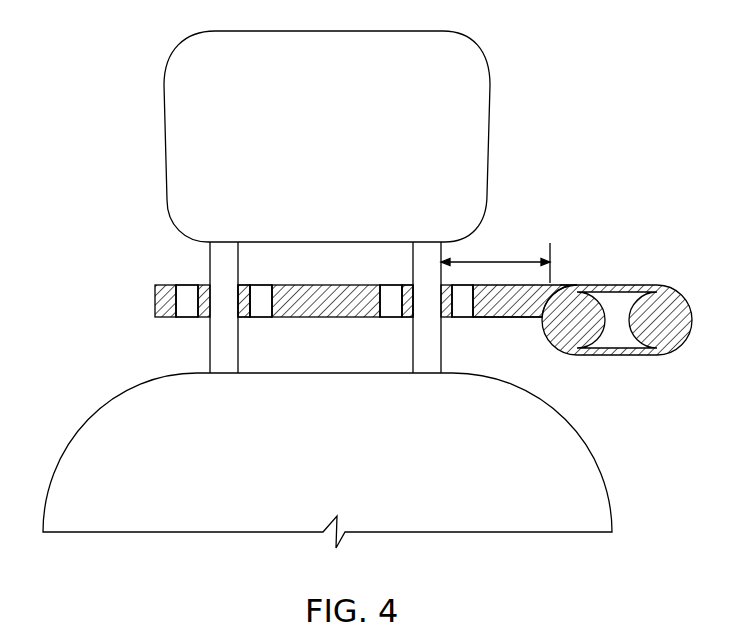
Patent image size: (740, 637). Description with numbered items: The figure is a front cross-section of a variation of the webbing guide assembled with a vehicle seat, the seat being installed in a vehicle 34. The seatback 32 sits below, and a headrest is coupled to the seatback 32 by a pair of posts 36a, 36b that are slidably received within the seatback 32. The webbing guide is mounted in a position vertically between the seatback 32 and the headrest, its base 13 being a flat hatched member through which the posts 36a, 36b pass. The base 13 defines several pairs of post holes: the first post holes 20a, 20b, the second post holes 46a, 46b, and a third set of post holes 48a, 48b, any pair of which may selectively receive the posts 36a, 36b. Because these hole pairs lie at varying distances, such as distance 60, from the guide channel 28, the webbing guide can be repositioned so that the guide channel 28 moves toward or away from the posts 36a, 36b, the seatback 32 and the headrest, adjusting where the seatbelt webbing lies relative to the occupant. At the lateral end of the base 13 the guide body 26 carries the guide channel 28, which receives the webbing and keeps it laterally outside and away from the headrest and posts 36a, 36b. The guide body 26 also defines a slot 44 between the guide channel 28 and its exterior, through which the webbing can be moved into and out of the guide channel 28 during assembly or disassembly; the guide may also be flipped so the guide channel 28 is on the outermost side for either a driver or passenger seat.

The base 13 is at (325, 293).
The first post hole 20a is at (460, 308).
The first post hole 20b is at (262, 313).
The guide body 26 is at (519, 308).
The guide channel 28 is at (617, 313).
The seatback 32 is at (562, 458).
The vehicle 34 is at (466, 88).
The post 36a is at (421, 263).
The post 36b is at (218, 260).
The slot 44 is at (579, 284).
The second post hole 46a is at (415, 310).
The second post hole 46b is at (238, 310).
The third post hole 48a is at (393, 313).
The third post hole 48b is at (178, 293).
The distance 60 is at (503, 256).